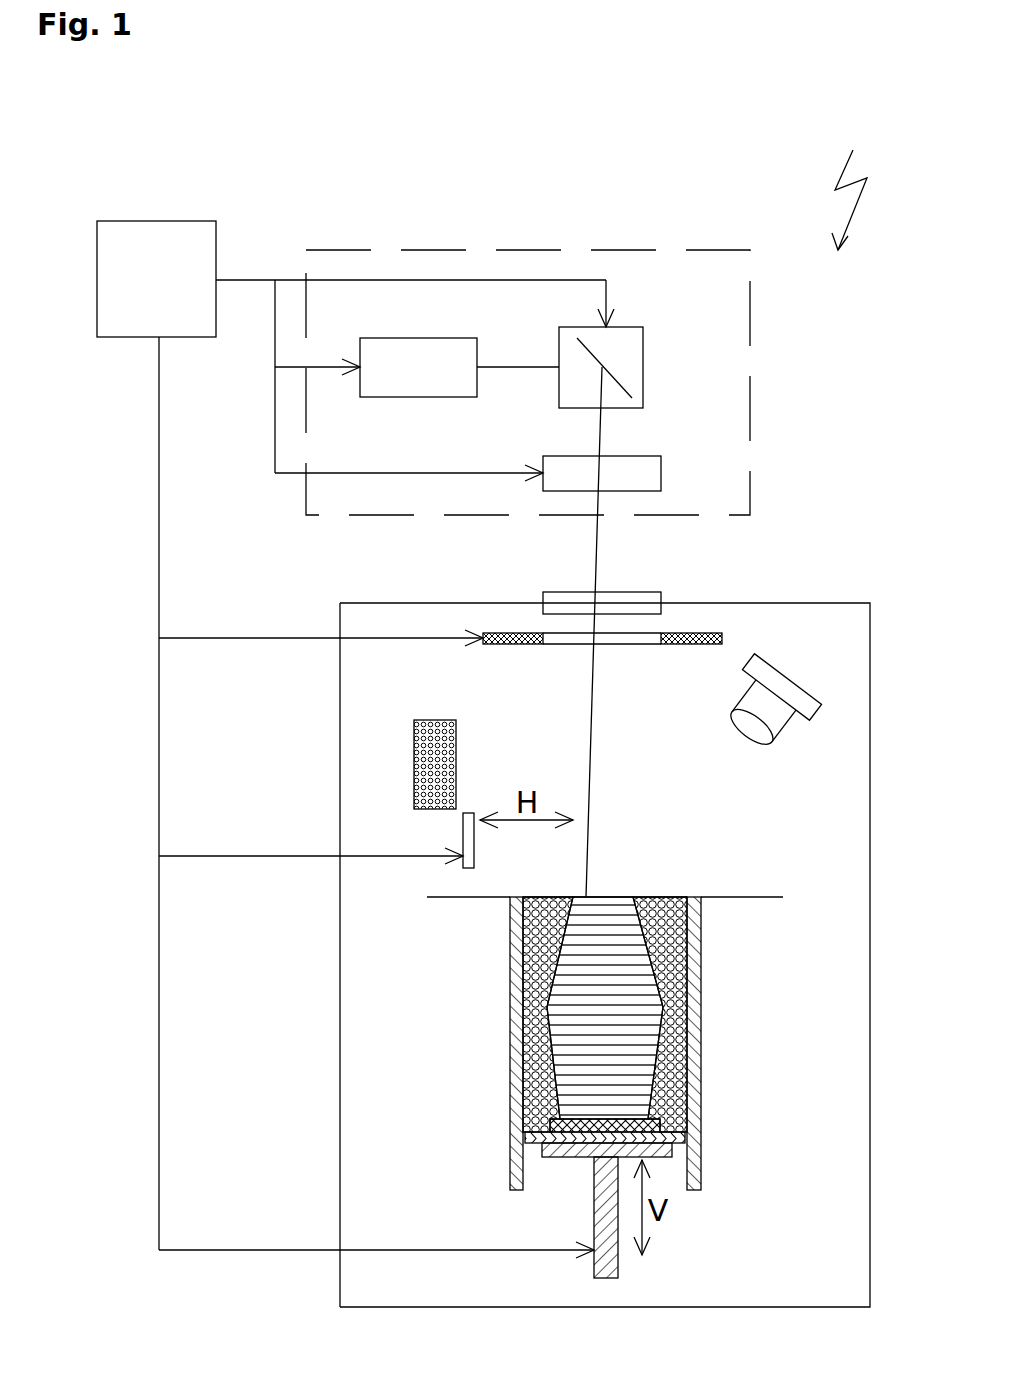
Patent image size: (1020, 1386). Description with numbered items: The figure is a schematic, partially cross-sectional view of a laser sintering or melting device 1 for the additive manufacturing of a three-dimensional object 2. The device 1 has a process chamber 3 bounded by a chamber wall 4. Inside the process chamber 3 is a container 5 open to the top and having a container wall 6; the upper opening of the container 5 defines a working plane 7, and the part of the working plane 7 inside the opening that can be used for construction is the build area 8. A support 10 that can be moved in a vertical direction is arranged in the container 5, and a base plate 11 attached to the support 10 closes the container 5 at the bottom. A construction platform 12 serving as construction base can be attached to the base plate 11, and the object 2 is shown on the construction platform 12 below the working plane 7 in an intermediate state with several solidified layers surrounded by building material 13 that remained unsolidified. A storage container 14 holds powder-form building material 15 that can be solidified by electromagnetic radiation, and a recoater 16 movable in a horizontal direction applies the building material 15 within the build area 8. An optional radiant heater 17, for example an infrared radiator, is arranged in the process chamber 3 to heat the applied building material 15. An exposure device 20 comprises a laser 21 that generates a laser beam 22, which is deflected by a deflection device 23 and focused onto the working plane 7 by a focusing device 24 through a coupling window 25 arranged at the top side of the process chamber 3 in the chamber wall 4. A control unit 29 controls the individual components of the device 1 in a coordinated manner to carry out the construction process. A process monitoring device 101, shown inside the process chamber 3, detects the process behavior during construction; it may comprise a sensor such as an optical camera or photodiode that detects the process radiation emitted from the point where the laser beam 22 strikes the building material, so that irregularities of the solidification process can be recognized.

The laser sintering or melting device 1 is at (854, 183).
The object 2 is at (623, 955).
The process chamber 3 is at (787, 638).
The chamber wall 4 is at (340, 1097).
The container 5 is at (702, 1102).
The container wall 6 is at (698, 1043).
The working plane 7 is at (752, 897).
The build area 8 is at (663, 897).
The support 10 is at (582, 1150).
The base plate 11 is at (542, 1145).
The construction platform 12 is at (523, 1125).
The building material 13 is at (547, 942).
The storage container 14 is at (432, 720).
The building material 15 is at (456, 765).
The recoater 16 is at (470, 836).
The radiant heater 17 is at (510, 633).
The exposure device 20 is at (750, 367).
The laser 21 is at (418, 397).
The laser beam 22 is at (500, 365).
The deflection device 23 is at (643, 337).
The focusing device 24 is at (661, 468).
The coupling window 25 is at (638, 603).
The control unit 29 is at (355, 351).
The process monitoring device 101 is at (807, 708).